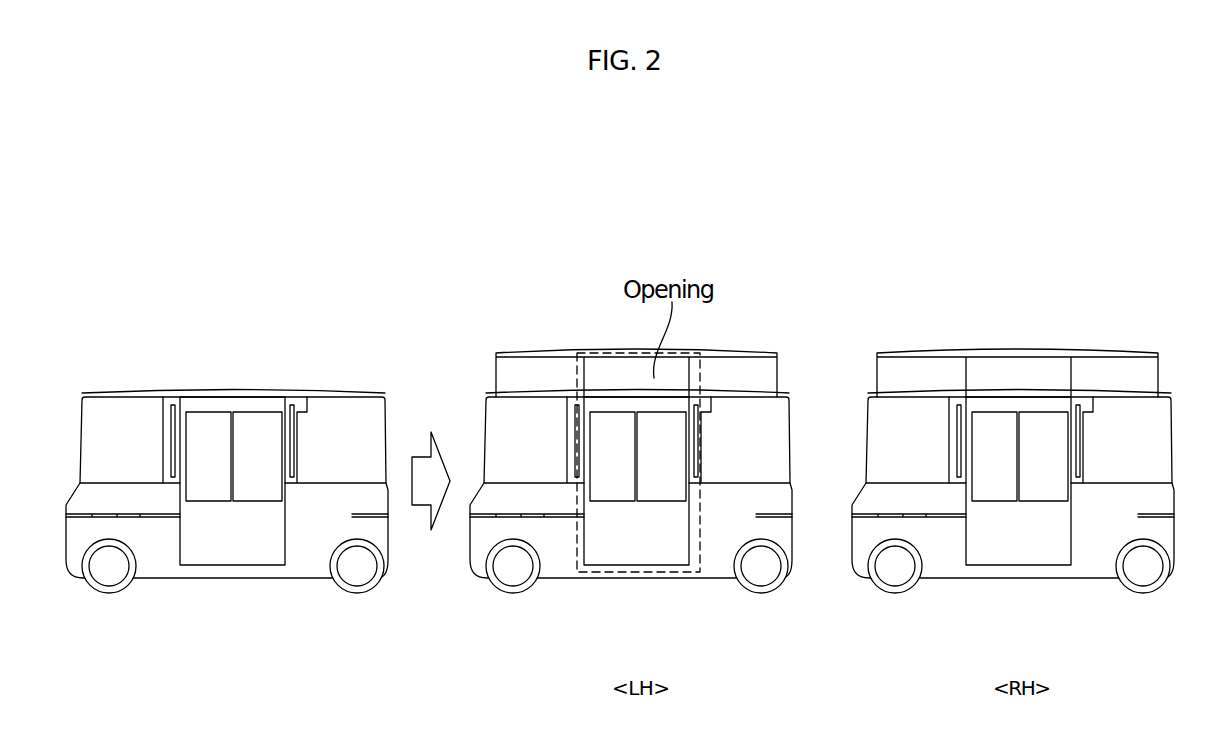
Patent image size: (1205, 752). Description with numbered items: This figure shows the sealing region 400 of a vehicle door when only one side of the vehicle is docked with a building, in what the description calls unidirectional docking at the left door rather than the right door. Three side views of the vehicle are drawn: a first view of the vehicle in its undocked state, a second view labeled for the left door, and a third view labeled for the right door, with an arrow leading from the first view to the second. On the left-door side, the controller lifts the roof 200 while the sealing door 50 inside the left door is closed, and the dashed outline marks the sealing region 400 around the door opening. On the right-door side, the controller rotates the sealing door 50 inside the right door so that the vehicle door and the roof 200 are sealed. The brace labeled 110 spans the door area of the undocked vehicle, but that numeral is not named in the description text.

The sliding door 110 is at (291, 405).
The roof 200 is at (557, 355).
The sealing region 400 is at (593, 572).
The sealing door 50 is at (1017, 375).